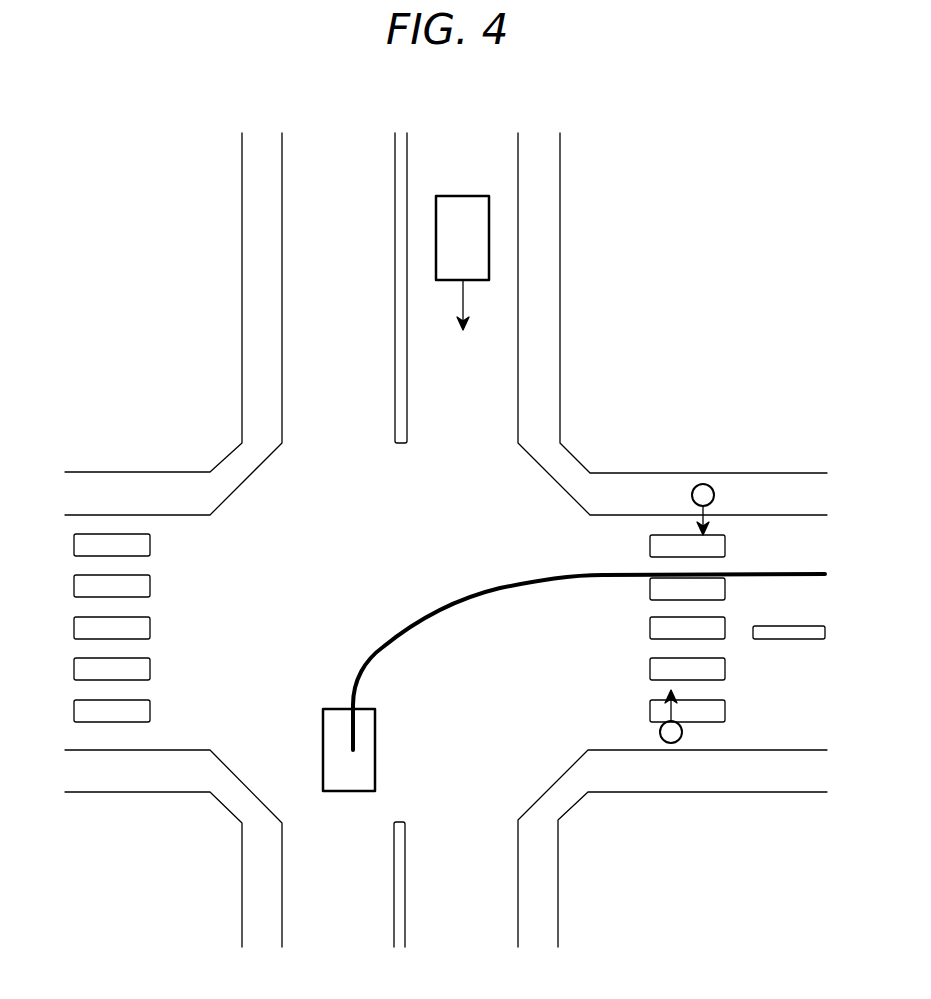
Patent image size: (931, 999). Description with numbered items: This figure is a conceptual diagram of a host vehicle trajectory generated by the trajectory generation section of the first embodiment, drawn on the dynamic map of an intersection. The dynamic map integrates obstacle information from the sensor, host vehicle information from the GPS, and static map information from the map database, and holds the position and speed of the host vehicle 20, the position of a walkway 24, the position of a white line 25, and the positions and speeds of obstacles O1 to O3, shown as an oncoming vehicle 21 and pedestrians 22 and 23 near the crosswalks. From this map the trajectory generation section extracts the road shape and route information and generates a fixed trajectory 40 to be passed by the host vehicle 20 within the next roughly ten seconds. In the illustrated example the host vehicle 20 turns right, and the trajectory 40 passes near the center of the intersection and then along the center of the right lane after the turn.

The host vehicle 20 is at (323, 733).
The obstacle O1 21 is at (468, 196).
The obstacle O2 22 is at (703, 483).
The obstacle O3 23 is at (672, 745).
The walkway 24 is at (283, 217).
The white line 25 is at (395, 330).
The trajectory 40 is at (427, 615).